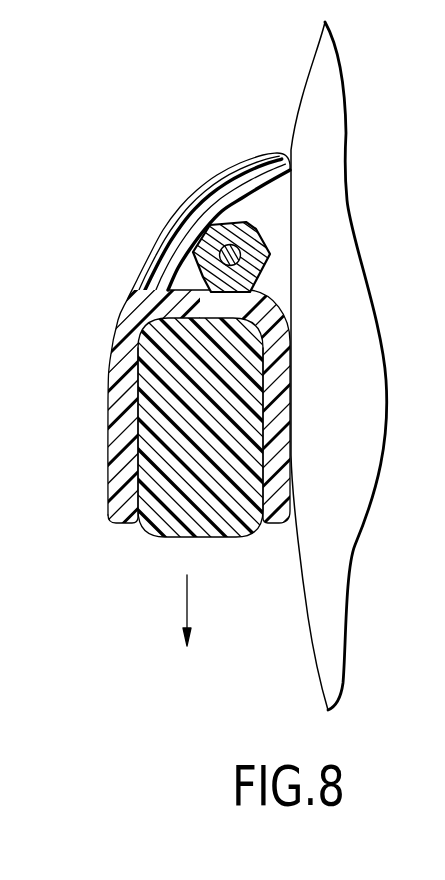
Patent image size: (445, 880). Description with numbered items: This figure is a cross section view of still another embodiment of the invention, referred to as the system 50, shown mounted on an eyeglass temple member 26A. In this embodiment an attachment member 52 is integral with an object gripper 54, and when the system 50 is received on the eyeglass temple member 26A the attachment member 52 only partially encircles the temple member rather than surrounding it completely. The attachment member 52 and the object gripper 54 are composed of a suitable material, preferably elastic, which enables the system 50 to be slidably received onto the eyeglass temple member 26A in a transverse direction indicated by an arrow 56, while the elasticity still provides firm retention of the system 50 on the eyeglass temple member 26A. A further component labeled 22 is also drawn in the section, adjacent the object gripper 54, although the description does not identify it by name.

The system 50 is at (197, 101).
The object gripper 54 is at (188, 215).
The clamping block 22 is at (250, 238).
The attachment member 52 is at (125, 466).
The eyeglass temple member 26A is at (183, 515).
The arrow 56 is at (189, 588).